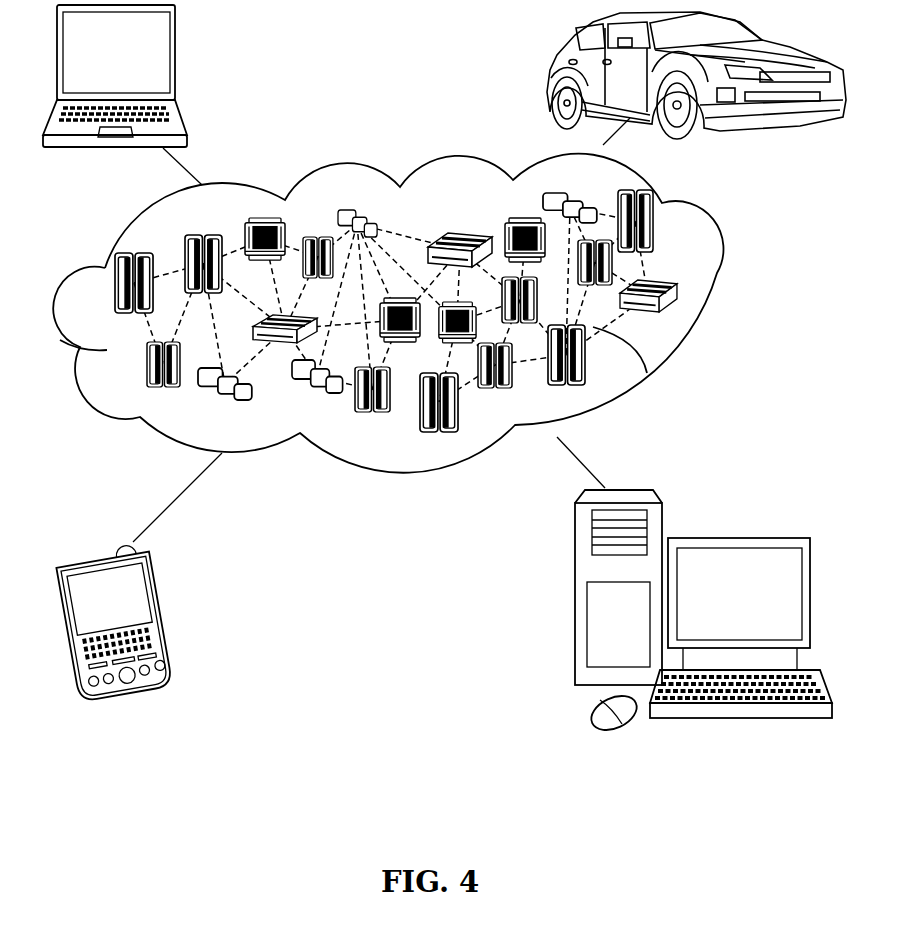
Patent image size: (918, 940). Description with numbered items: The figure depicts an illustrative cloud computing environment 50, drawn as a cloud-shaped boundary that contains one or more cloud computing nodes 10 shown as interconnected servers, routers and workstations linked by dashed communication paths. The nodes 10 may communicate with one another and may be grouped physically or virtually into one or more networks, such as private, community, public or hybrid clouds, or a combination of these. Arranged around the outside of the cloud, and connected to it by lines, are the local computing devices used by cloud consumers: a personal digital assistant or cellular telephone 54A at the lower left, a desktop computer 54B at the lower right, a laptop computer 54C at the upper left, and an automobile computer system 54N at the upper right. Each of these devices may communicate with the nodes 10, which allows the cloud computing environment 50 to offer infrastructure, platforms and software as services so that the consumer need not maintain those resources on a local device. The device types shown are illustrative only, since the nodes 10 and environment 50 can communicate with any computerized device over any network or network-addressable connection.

The cloud computing nodes 10 is at (690, 320).
The cloud computing environment 50 is at (738, 297).
The personal digital assistant or cellular telephone 54A is at (168, 615).
The desktop computer 54B is at (737, 538).
The laptop computer 54C is at (175, 61).
The automobile computer system 54N is at (553, 72).